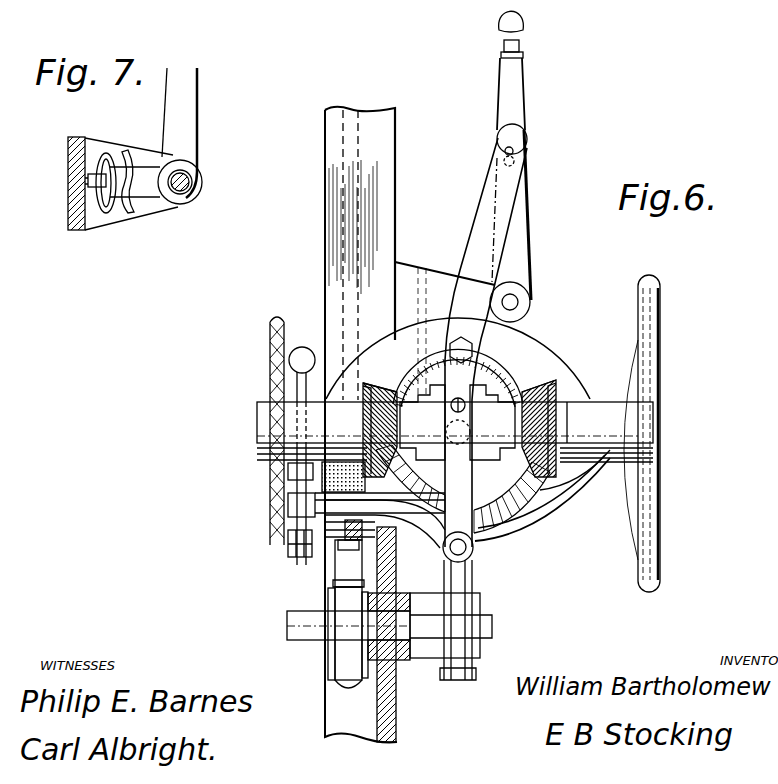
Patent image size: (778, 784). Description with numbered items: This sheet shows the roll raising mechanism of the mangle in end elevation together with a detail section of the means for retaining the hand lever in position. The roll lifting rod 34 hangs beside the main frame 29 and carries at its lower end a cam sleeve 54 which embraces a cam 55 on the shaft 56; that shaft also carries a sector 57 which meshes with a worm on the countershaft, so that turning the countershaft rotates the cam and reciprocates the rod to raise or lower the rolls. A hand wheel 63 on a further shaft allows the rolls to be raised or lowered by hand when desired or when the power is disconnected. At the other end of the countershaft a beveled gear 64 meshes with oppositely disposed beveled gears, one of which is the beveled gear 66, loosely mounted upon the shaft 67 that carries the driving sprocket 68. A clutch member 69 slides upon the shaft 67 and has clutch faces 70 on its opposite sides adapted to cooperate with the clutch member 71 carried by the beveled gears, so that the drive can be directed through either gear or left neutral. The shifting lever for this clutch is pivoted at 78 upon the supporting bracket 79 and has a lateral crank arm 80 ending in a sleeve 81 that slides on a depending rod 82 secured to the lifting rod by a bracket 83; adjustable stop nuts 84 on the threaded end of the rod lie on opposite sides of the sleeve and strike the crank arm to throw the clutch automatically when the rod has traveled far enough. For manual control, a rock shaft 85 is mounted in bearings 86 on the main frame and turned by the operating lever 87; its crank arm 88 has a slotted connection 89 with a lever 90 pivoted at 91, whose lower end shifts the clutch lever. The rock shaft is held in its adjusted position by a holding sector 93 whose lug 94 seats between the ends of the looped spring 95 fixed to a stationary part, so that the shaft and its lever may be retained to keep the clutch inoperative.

In FIG. 6, the main frame 29 is at (397, 150).
In FIG. 6, the lifting rod 34 is at (343, 162).
In FIG. 6, the cam sleeve 54 is at (345, 599).
In FIG. 6, the cam 55 is at (335, 657).
In FIG. 6, the shaft 56 is at (290, 627).
In FIG. 6, the sector 57 is at (500, 587).
In FIG. 6, the hand wheel 63 is at (664, 275).
In FIG. 6, the beveled gear 64 is at (507, 533).
In FIG. 6, the beveled gear 66 is at (548, 385).
In FIG. 6, the shaft 67 is at (655, 417).
In FIG. 6, the driving sprocket 68 is at (273, 322).
In FIG. 6, the clutch member 69 is at (412, 392).
In FIG. 6, the clutch faces 70 is at (487, 402).
In FIG. 6, the clutch member 71 is at (517, 402).
In FIG. 6, the pivot 78 is at (476, 585).
In FIG. 6, the supporting bracket 79 is at (475, 557).
In FIG. 6, the crank arm 80 is at (392, 517).
In FIG. 6, the sleeve 81 is at (296, 512).
In FIG. 6, the depending rod 82 is at (297, 385).
In FIG. 6, the bracket 83 is at (308, 350).
In FIG. 6, the stop nuts 84 is at (288, 478).
In FIG. 7, the rock shaft 85 is at (196, 197).
In FIG. 6, the rock shaft 85 is at (527, 290).
In FIG. 7, the bearings 86 is at (200, 180).
In FIG. 6, the bearings 86 is at (531, 304).
In FIG. 7, the operating lever 87 is at (200, 90).
In FIG. 6, the operating lever 87 is at (523, 85).
In FIG. 6, the crank arm 88 is at (531, 227).
In FIG. 6, the slotted connection 89 is at (517, 145).
In FIG. 7, the lever 90 is at (88, 181).
In FIG. 6, the lever 90 is at (478, 220).
In FIG. 6, the pivot 91 is at (458, 398).
In FIG. 7, the holding sector 93 is at (152, 192).
In FIG. 7, the lug 94 is at (126, 213).
In FIG. 7, the looped spring 95 is at (108, 152).